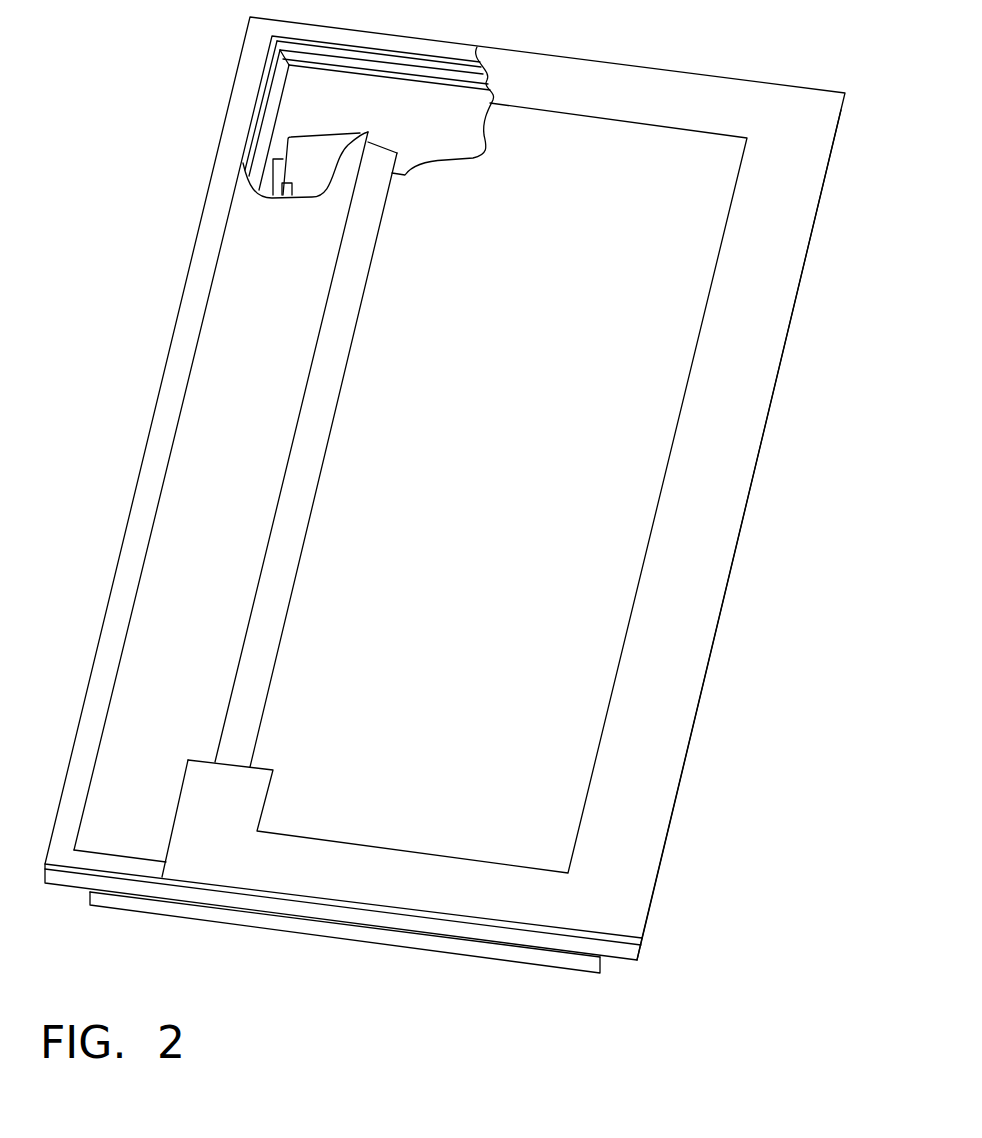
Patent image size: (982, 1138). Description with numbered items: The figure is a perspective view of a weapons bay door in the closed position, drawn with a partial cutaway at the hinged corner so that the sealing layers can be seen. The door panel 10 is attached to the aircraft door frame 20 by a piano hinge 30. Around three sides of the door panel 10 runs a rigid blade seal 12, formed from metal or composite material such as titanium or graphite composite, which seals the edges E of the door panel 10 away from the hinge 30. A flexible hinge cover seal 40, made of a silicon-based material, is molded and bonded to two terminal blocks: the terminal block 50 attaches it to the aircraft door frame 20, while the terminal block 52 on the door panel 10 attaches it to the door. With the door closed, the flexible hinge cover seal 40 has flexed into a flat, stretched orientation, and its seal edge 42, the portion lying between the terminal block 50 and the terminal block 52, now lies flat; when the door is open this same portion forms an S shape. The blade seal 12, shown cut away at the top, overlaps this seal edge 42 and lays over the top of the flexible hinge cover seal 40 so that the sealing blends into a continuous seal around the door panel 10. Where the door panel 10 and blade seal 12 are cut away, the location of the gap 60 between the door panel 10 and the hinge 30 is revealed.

The door panel 10 is at (467, 488).
The rigid blade seal 12 is at (645, 82).
The aircraft door frame 20 is at (403, 74).
The piano hinge 30 is at (320, 153).
The flexible hinge cover seal 40 is at (277, 456).
The seal edge 42 is at (370, 137).
The terminal block 50 is at (242, 118).
The terminal block 52 is at (327, 390).
The gap 60 is at (272, 182).
The edges E is at (596, 58).